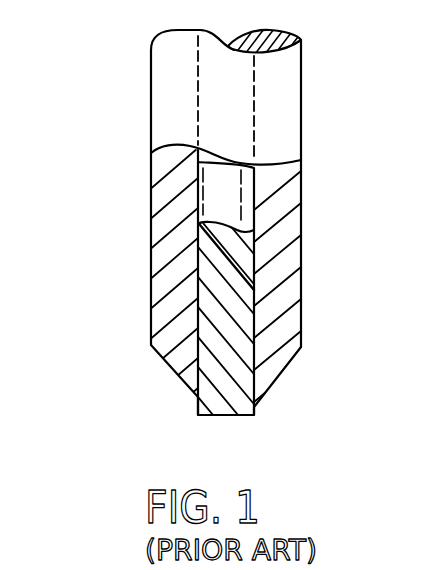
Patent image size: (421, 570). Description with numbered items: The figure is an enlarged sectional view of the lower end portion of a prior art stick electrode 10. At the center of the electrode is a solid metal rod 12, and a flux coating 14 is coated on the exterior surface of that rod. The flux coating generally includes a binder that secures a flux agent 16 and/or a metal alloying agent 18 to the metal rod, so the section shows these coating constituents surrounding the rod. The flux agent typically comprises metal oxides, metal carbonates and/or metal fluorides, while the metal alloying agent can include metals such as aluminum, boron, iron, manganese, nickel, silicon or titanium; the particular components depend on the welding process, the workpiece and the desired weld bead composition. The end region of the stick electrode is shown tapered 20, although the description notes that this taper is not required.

The stick electrode 10 is at (117, 113).
The solid metal rod 12 is at (212, 262).
The flux coating 14 is at (301, 205).
The flux agent 16 is at (285, 125).
The metal alloying agent 18 is at (161, 173).
The tapered end region 20 is at (280, 372).